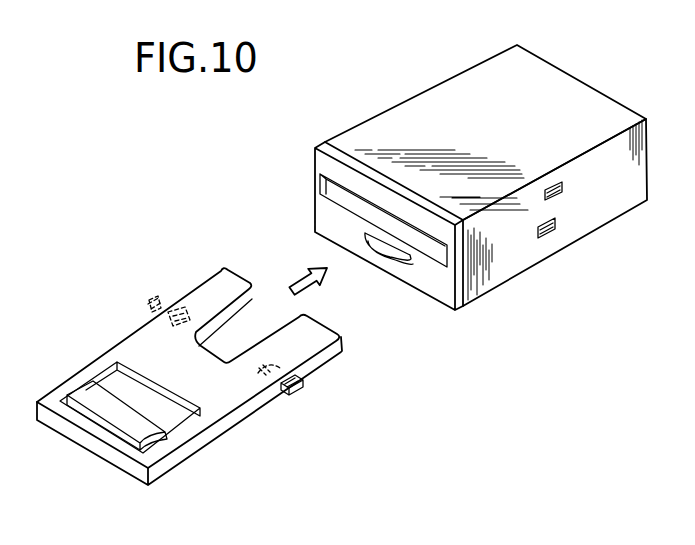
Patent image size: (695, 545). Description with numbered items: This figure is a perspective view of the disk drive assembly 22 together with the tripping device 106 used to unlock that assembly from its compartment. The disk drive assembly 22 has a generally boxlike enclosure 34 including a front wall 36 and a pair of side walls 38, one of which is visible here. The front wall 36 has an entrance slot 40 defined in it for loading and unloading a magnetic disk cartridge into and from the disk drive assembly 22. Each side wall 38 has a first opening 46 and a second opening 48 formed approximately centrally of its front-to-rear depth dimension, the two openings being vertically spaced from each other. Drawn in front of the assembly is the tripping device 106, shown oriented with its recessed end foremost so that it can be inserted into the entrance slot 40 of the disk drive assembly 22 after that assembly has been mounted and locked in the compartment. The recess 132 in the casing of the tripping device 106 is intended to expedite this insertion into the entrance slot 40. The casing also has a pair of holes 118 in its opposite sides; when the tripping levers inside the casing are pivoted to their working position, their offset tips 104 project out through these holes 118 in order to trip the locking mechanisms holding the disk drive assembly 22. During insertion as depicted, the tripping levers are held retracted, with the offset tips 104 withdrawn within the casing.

The disk drive assembly 22 is at (466, 170).
The enclosure 34 is at (374, 121).
The front wall 36 is at (322, 166).
The side wall 38 is at (562, 212).
The entrance slot 40 is at (338, 192).
The first opening 46 is at (555, 225).
The second opening 48 is at (562, 188).
The offset tip 104 is at (178, 306).
The tripping device 106 is at (202, 369).
The hole 118 is at (283, 395).
The recess 132 is at (276, 333).